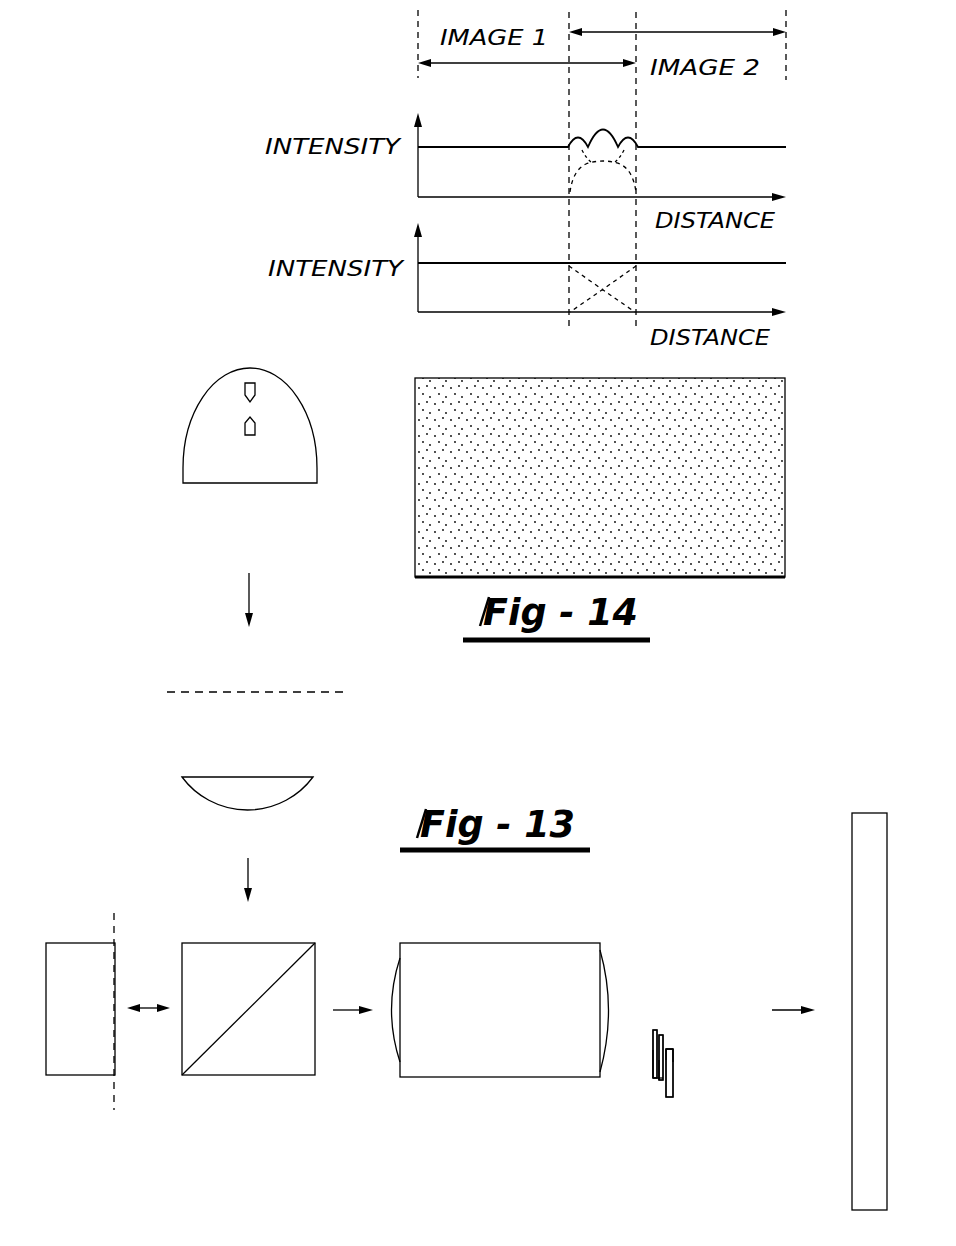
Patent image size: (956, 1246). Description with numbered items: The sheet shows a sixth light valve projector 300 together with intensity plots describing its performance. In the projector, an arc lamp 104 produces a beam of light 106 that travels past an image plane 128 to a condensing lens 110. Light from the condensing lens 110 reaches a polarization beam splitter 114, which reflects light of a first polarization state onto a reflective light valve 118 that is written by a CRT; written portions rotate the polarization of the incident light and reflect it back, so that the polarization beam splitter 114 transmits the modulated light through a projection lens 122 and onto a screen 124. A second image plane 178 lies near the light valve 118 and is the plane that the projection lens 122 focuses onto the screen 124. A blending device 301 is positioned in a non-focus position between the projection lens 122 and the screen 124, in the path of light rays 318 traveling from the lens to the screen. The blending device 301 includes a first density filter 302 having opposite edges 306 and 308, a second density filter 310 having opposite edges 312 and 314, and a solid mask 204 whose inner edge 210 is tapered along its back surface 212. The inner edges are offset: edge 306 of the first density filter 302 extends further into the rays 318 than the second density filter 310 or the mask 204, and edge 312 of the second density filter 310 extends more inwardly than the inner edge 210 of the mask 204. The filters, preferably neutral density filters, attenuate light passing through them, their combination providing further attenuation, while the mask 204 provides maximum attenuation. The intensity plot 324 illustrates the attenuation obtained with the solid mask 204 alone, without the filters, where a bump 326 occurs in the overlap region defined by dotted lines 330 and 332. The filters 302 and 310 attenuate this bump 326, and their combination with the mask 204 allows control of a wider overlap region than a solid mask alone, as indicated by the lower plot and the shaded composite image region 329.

In FIG. 14, the sixth light valve projector 300 is at (166, 538).
In FIG. 14, the arc lamp 104 is at (313, 462).
In FIG. 14, the beam of light 106 is at (249, 588).
In FIG. 14, the image plane 128 is at (285, 692).
In FIG. 14, the projected image area 329 is at (415, 424).
In FIG. 14, the intensity plot 324 is at (418, 165).
In FIG. 14, the bump 326 is at (601, 130).
In FIG. 14, the dotted line 330 is at (569, 88).
In FIG. 14, the dotted line 332 is at (636, 117).
In FIG. 13, the condensing lens 110 is at (288, 801).
In FIG. 13, the reflective light valve 118 is at (78, 943).
In FIG. 13, the image plane 178 is at (115, 927).
In FIG. 13, the polarization beam splitter 114 is at (276, 943).
In FIG. 13, the projection lens 122 is at (475, 943).
In FIG. 13, the screen 124 is at (853, 853).
In FIG. 13, the blending device 301 is at (685, 958).
In FIG. 13, the edge of first density filter 306 is at (655, 1030).
In FIG. 13, the edge of second density filter 312 is at (661, 1035).
In FIG. 13, the second density filter 310 is at (667, 1048).
In FIG. 13, the inner edge 210 is at (666, 1047).
In FIG. 13, the back surface 212 is at (673, 1056).
In FIG. 13, the solid mask 204 is at (674, 1077).
In FIG. 13, the first density filter 302 is at (653, 1058).
In FIG. 13, the edge of first density filter 308 is at (660, 1080).
In FIG. 13, the edge of second density filter 314 is at (658, 1080).
In FIG. 13, the light rays 318 is at (787, 1008).